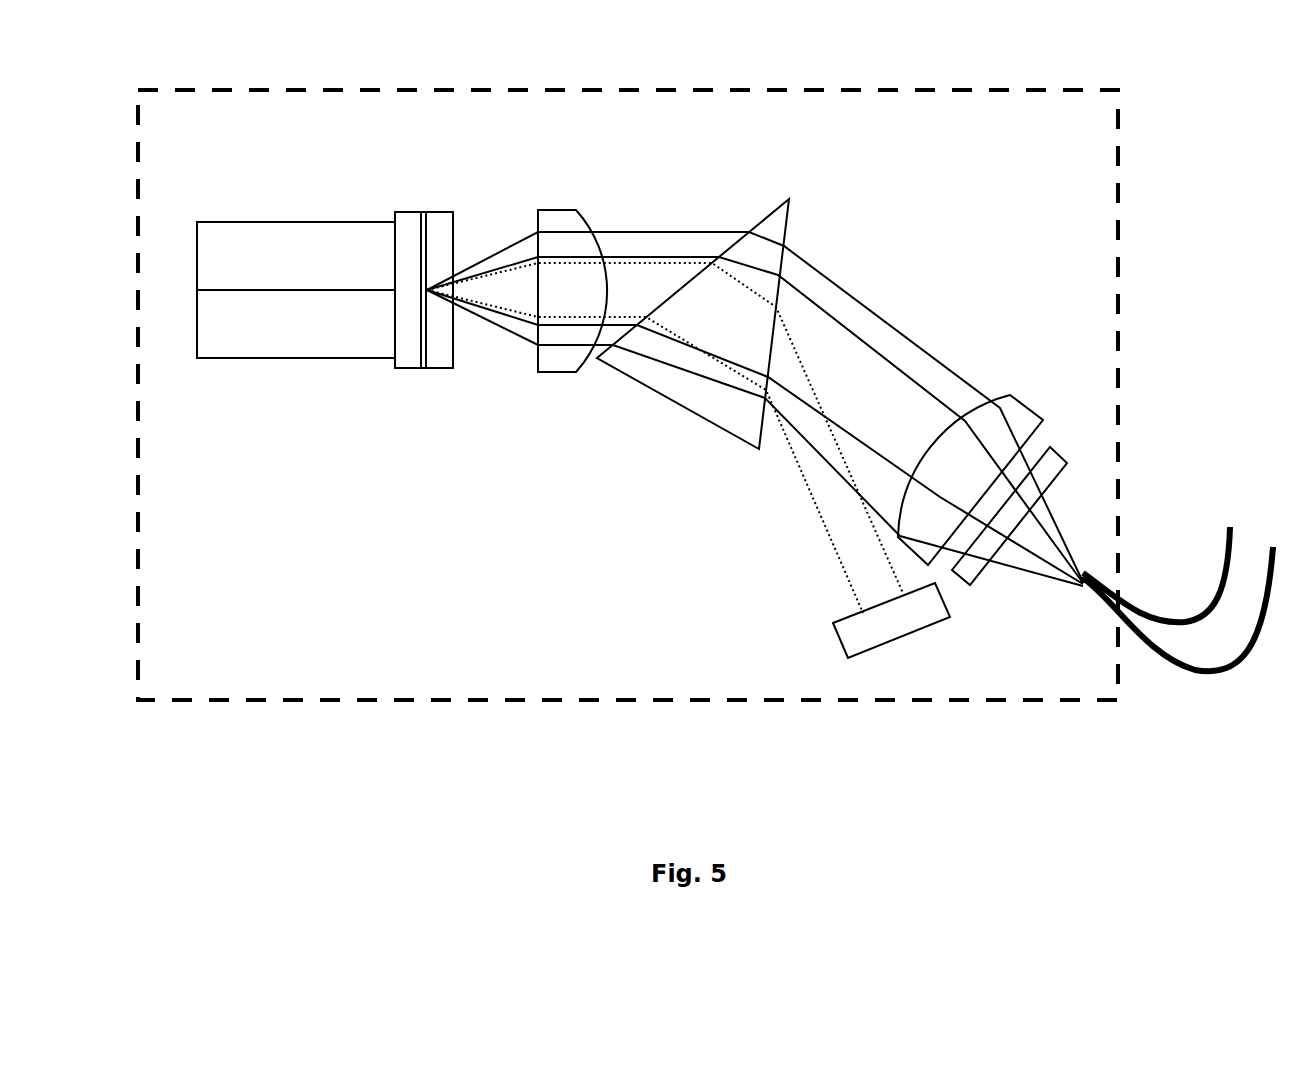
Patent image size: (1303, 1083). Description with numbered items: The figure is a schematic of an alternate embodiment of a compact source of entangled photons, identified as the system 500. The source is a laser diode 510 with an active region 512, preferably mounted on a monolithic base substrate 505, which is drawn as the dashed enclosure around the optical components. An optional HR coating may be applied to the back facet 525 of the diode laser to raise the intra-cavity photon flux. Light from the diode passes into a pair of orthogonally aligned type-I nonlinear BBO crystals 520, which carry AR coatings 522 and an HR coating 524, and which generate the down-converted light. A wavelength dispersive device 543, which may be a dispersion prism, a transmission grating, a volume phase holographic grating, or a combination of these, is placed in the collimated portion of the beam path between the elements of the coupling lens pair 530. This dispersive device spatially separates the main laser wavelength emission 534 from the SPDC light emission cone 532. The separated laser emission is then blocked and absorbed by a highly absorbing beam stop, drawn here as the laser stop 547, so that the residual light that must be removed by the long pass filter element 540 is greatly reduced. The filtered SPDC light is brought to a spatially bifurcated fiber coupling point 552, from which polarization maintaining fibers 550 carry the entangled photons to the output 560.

The system 500 is at (607, 702).
The monolithic base substrate 505 is at (388, 708).
The laser diode 510 is at (270, 372).
The active region 512 is at (295, 285).
The type-I nonlinear BBO crystals 520 is at (410, 207).
The AR coatings 522 is at (391, 315).
The HR coating 524 is at (455, 357).
The back facet 525 is at (195, 360).
The coupling lens pair 530 is at (577, 373).
The SPDC light emission cone 532 is at (562, 230).
The main laser wavelength emission 534 is at (667, 263).
The long pass filter element 540 is at (1065, 447).
The wavelength dispersive device 543 is at (792, 233).
The laser stop 547 is at (830, 632).
The polarization maintaining fibers 550 is at (1173, 675).
The spatially bifurcated fiber coupling point 552 is at (1075, 597).
The output 560 is at (1237, 506).